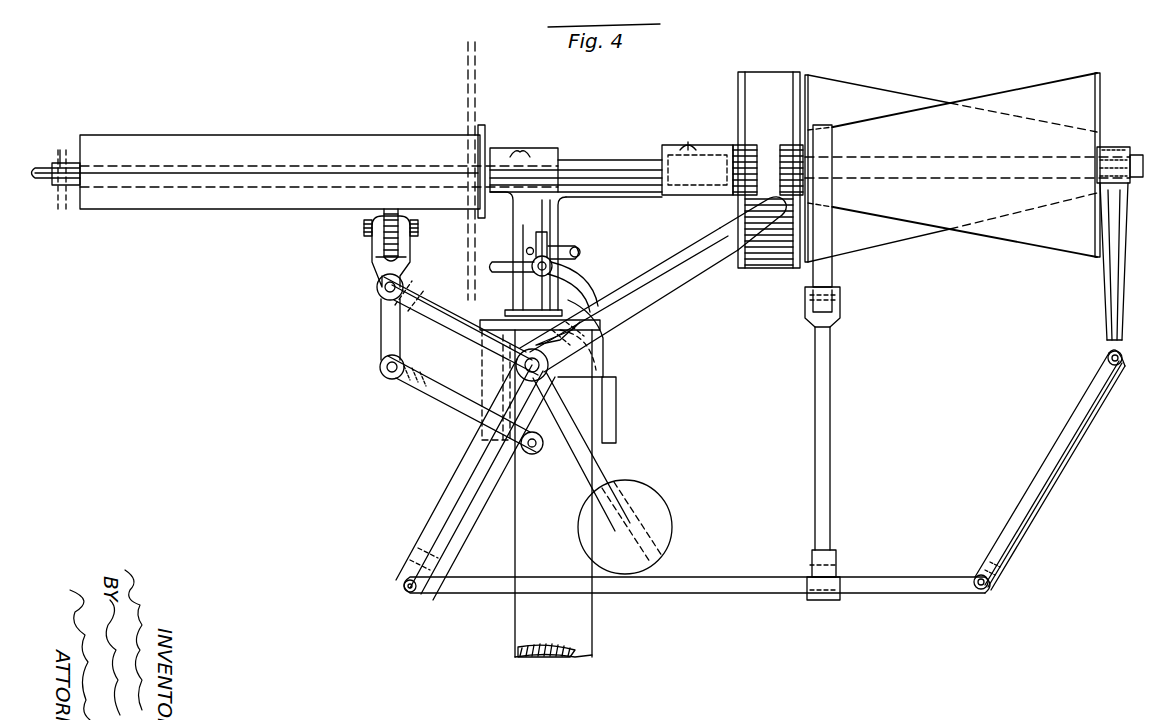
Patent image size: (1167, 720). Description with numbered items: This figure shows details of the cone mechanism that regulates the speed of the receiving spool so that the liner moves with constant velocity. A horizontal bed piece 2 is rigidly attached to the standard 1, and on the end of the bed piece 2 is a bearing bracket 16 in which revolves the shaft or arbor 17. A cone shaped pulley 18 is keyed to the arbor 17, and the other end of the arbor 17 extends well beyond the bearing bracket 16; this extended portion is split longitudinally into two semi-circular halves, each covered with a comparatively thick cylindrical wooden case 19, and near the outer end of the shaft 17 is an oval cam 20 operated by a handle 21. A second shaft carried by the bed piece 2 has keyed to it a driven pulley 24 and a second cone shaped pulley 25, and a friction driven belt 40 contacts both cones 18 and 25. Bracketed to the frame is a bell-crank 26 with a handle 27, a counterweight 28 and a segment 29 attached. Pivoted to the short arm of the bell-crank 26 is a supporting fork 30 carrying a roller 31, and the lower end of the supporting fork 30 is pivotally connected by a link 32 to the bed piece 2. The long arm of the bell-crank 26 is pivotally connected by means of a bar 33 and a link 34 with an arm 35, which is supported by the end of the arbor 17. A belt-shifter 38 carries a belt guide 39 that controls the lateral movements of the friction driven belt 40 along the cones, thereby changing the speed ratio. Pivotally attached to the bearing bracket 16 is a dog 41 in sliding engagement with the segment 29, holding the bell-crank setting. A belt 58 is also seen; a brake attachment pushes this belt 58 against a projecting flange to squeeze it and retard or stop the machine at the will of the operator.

The standard 1 is at (553, 493).
The bed piece 2 is at (622, 390).
The bearing bracket 16 is at (522, 230).
The shaft or arbor 17 is at (322, 150).
The cone shaped pulley 18 is at (998, 236).
The cylindrical wooden case 19 is at (200, 145).
The oval cam 20 is at (54, 151).
The handle 21 is at (48, 192).
The driven pulley 24 is at (738, 125).
The cone shaped pulley 25 is at (874, 100).
The bell-crank 26 is at (458, 330).
The handle 27 is at (675, 292).
The counterweight 28 is at (650, 498).
The segment 29 is at (606, 350).
The supporting fork 30 is at (377, 287).
The roller 31 is at (372, 244).
The link 32 is at (432, 403).
The bar 33 is at (742, 580).
The link 34 is at (1055, 475).
The arm 35 is at (1126, 290).
The belt-shifter 38 is at (825, 430).
The belt guide 39 is at (845, 296).
The friction driven belt 40 is at (835, 270).
The dog 41 is at (547, 272).
The belt 58 is at (782, 80).